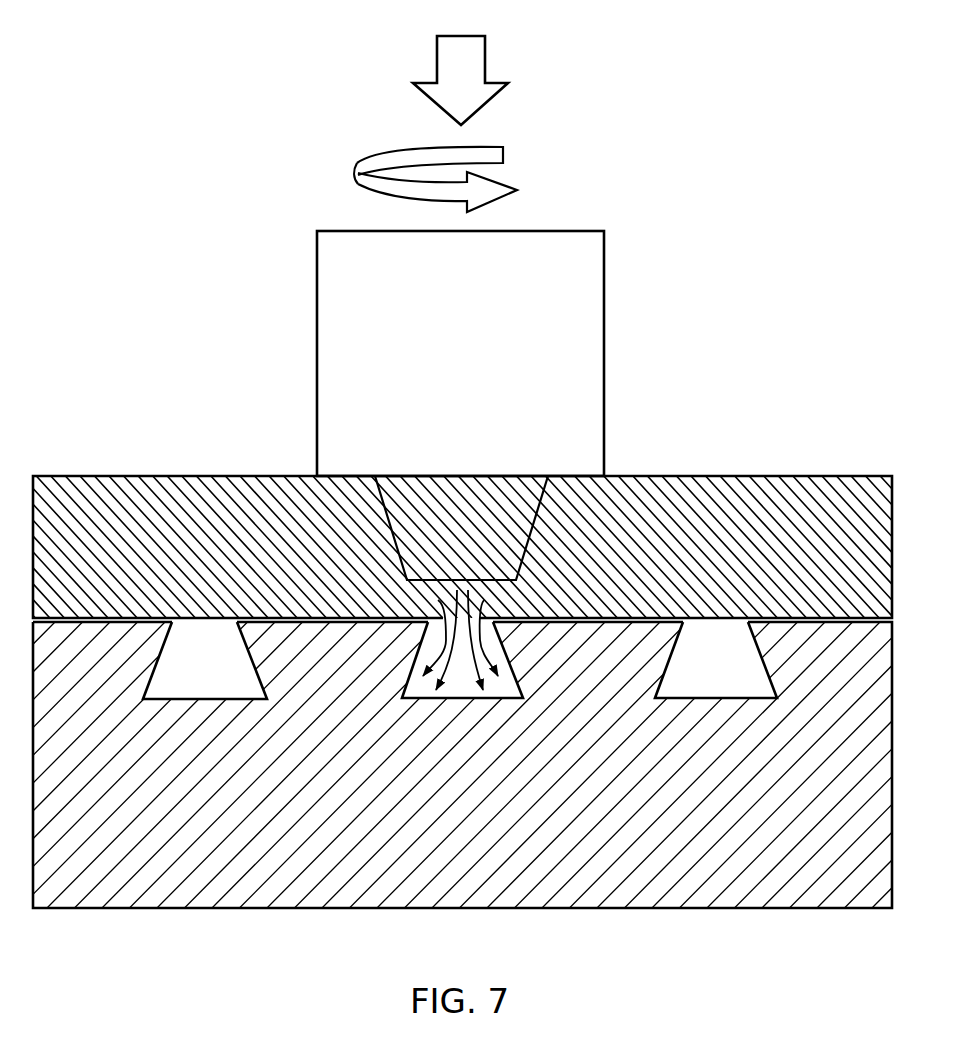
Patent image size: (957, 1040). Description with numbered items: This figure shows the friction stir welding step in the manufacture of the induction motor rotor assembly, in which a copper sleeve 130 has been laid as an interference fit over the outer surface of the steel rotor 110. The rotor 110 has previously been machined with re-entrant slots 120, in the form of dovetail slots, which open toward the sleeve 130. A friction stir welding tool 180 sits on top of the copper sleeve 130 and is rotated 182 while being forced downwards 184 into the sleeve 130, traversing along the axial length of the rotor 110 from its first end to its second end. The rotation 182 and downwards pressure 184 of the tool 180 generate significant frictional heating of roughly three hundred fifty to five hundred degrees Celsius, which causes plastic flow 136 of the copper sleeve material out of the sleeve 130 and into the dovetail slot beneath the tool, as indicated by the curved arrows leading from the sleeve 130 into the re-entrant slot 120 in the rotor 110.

The rotor 110 is at (867, 767).
The re-entrant slots 120 is at (195, 700).
The copper sleeve 130 is at (872, 528).
The plastic flow 136 is at (447, 699).
The friction stir welding tool 180 is at (604, 297).
The rotation 182 is at (355, 170).
The downwards pressure 184 is at (488, 62).